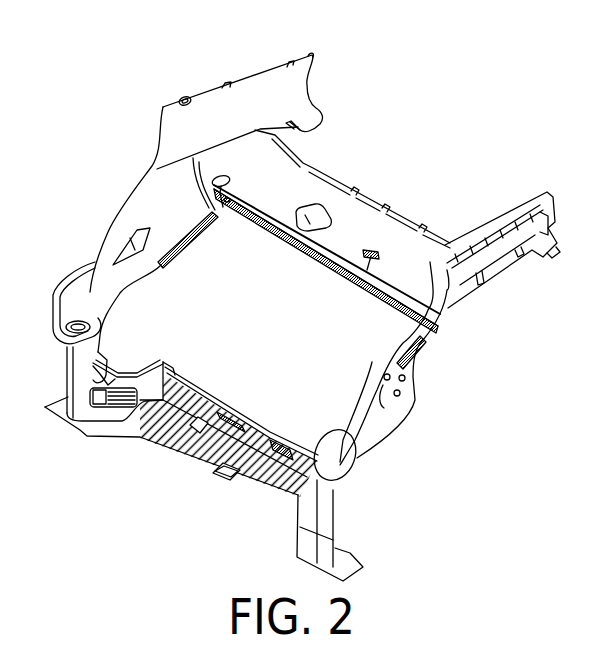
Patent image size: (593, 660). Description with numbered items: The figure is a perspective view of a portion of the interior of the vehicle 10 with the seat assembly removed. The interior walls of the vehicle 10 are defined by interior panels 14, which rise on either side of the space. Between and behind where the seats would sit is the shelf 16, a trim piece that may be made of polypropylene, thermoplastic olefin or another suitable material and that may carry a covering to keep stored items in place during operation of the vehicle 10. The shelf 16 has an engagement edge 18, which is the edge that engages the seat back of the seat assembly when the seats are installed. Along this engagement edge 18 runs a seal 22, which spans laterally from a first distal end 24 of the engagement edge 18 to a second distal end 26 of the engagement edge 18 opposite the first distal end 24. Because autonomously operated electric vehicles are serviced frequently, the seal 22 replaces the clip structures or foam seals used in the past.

The vehicle 10 is at (66, 141).
The interior panels 14 is at (140, 200).
The shelf 16 is at (367, 223).
The engagement edge 18 is at (267, 222).
The seal 22 is at (383, 290).
The first distal end 24 is at (197, 184).
The second distal end 26 is at (440, 327).